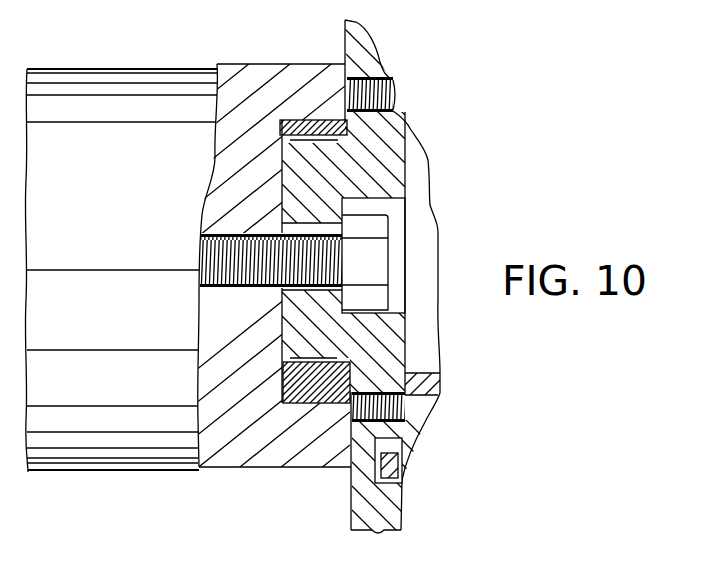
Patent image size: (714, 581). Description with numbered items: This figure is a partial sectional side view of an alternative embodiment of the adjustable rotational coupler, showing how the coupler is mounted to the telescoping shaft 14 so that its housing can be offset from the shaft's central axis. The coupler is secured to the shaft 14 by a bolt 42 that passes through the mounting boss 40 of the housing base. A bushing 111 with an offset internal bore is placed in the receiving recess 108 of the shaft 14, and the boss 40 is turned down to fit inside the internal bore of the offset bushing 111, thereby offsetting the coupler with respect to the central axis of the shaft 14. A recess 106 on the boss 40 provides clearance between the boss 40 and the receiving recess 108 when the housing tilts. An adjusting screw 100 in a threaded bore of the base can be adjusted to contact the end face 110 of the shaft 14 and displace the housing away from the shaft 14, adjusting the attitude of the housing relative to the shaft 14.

The telescoping shaft 14 is at (237, 456).
The mounting boss 40 is at (293, 179).
The bolt 42 is at (212, 260).
The adjusting screw 100 is at (348, 462).
The recess 106 is at (410, 343).
The receiving recess 108 is at (290, 122).
The end face 110 is at (363, 52).
The bushing 111 is at (305, 120).